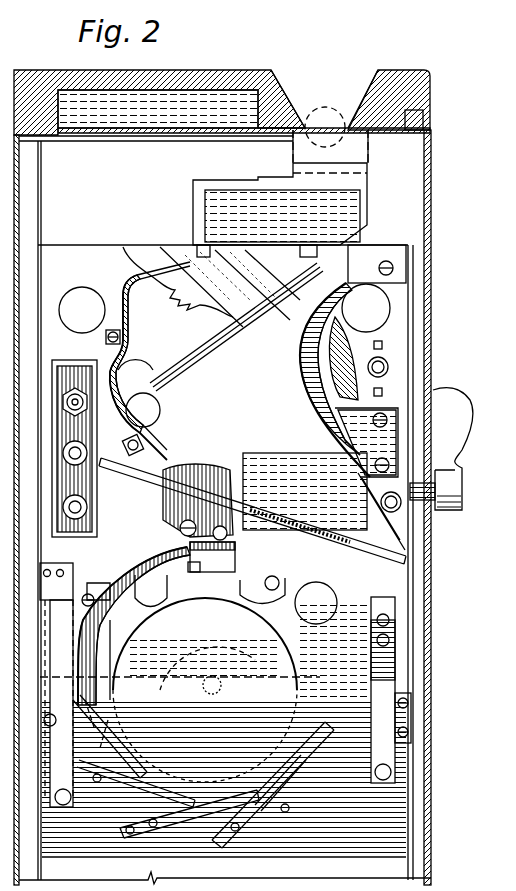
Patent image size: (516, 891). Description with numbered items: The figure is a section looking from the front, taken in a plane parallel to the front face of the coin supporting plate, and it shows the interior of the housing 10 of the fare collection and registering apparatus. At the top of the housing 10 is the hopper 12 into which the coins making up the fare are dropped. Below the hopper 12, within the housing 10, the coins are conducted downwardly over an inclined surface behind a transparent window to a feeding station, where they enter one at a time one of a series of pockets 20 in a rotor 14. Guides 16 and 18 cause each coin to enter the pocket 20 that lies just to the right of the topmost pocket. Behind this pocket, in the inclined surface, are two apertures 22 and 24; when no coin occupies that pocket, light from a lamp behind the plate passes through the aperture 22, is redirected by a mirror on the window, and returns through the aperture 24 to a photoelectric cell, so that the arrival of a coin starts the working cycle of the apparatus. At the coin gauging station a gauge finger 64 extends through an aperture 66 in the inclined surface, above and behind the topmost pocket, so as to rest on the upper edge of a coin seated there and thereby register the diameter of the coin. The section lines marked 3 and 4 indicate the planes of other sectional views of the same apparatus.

The housing 10 is at (445, 221).
The hopper 12 is at (404, 74).
The rotor 14 is at (198, 648).
The guide 16 is at (260, 556).
The guide 18 is at (391, 620).
The pockets 20 is at (153, 577).
The aperture 22 is at (335, 548).
The aperture 24 is at (240, 583).
The gauge finger 64 is at (187, 540).
The aperture 66 is at (197, 565).
The section line 3 is at (298, 332).
The section line 4 is at (150, 578).